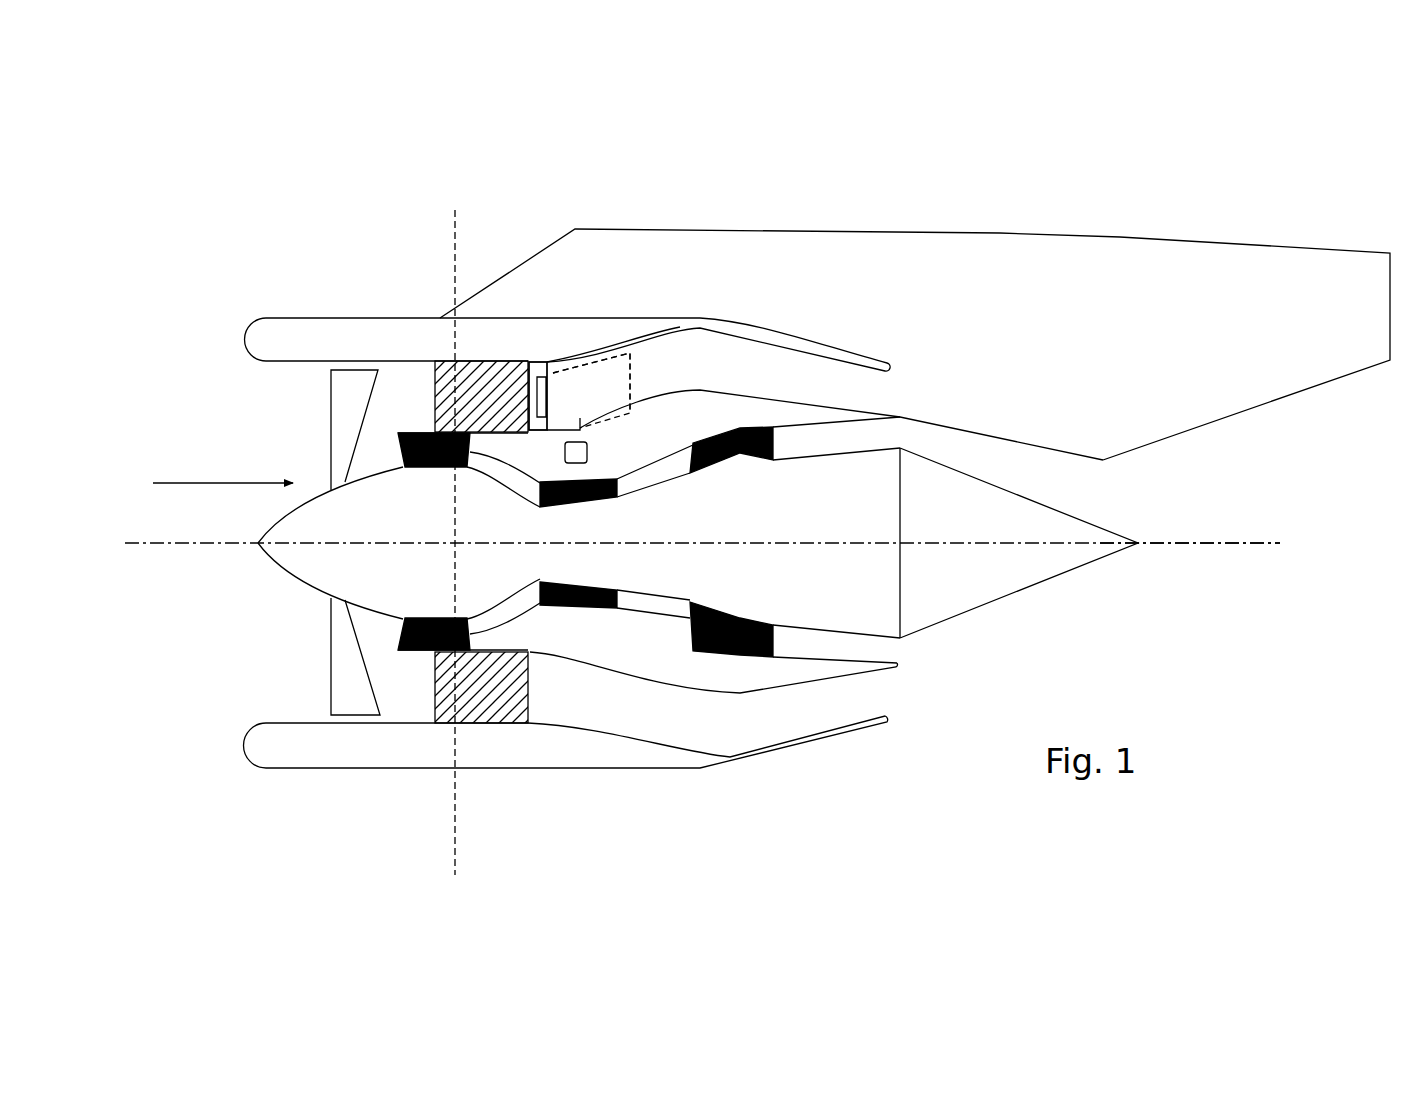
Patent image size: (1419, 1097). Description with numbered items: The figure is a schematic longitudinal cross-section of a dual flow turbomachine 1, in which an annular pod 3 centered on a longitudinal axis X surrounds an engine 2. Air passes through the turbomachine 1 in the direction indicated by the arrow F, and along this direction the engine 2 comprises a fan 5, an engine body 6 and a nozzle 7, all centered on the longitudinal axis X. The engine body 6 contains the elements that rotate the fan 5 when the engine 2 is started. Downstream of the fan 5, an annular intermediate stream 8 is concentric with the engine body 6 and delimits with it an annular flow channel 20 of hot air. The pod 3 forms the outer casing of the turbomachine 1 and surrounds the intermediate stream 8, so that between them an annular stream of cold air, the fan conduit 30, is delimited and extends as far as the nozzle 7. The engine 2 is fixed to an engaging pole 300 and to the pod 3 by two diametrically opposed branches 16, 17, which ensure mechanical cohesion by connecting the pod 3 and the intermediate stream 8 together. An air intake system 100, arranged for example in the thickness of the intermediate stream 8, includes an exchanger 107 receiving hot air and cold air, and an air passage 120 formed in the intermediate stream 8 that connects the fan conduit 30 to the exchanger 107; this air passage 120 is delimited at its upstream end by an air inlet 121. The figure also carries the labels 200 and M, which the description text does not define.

The dual flow turbomachine 1 is at (200, 328).
The engine 2 is at (812, 589).
The annular pod 3 is at (338, 330).
The fan 5 is at (330, 685).
The engine body 6 is at (737, 425).
The nozzle 7 is at (838, 438).
The annular intermediate stream 8 is at (880, 415).
The branch 16 is at (481, 463).
The branch 17 is at (447, 718).
The annular flow channel of hot air 20 is at (478, 430).
The fan conduit 30 is at (617, 375).
The air intake system 100 is at (705, 388).
The exchanger 107 is at (558, 398).
The air passage 120 is at (594, 452).
The air inlet 121 is at (577, 408).
The measuring device 200 is at (560, 418).
The engaging pole 300 is at (1165, 238).
The measurement zone M is at (652, 355).
The longitudinal axis X is at (1213, 540).
The arrow indicating air flow direction F is at (210, 480).